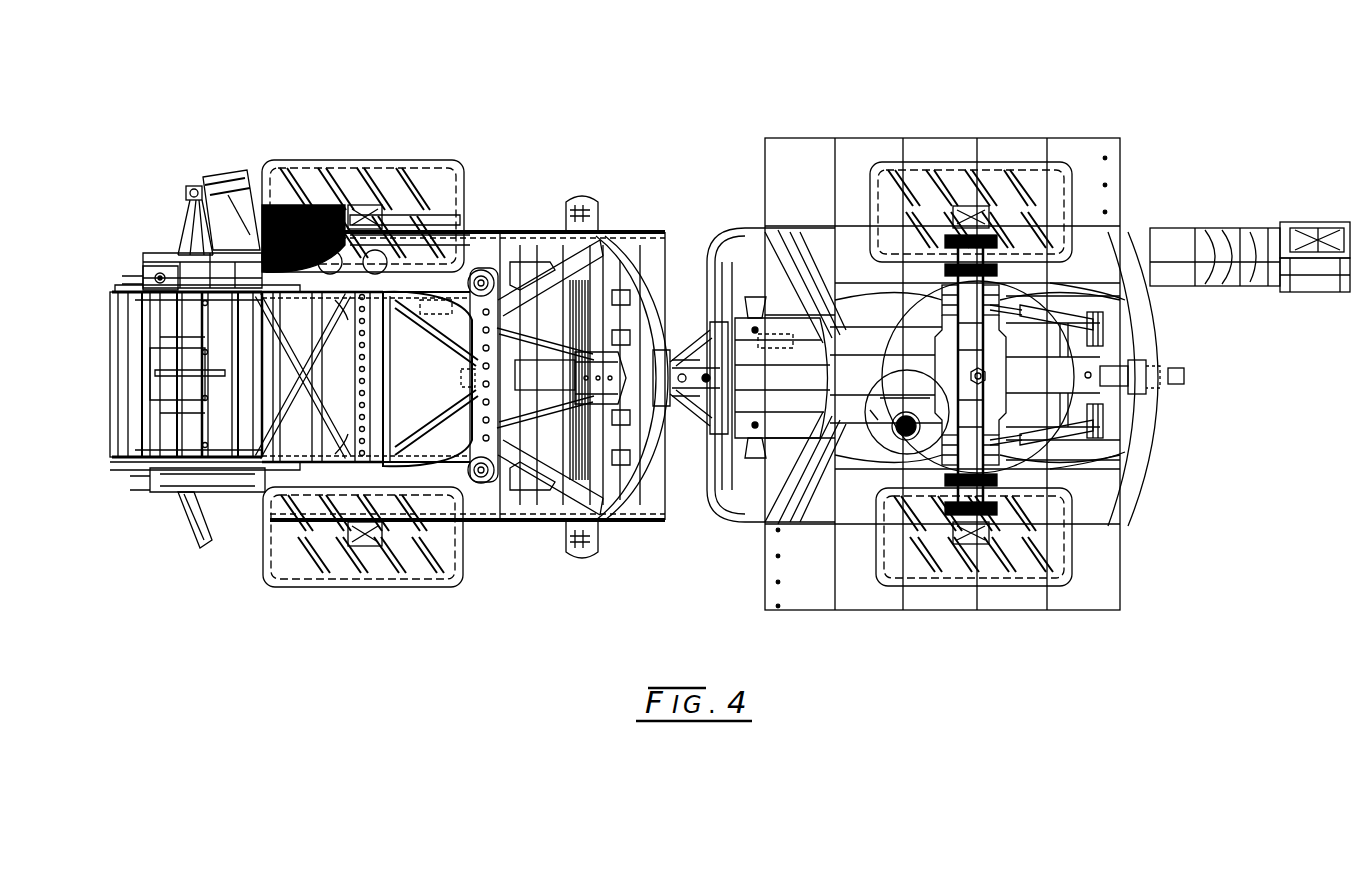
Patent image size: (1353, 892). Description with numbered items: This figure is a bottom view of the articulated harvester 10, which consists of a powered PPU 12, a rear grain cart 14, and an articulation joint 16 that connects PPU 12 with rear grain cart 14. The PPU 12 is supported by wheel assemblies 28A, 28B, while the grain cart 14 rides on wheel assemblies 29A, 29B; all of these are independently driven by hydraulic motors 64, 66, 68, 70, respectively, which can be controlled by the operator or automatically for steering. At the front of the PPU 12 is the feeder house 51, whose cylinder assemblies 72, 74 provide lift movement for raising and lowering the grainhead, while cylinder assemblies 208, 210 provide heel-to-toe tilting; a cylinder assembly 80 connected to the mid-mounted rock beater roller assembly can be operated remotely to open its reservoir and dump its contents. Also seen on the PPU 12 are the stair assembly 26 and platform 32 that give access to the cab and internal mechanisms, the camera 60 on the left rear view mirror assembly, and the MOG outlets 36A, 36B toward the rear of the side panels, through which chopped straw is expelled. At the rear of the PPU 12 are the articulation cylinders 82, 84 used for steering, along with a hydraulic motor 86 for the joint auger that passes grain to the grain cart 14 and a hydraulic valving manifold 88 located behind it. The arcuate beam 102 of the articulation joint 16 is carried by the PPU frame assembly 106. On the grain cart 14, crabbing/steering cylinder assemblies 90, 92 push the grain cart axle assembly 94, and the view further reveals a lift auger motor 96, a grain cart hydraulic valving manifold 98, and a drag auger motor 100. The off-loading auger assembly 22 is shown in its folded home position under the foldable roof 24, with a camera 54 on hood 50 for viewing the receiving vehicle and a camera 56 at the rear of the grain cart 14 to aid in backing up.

The articulated harvester 10 is at (560, 108).
The powered PPU 12 is at (348, 104).
The rear grain cart 14 is at (1116, 100).
The articulation joint 16 is at (675, 300).
The off-loading auger assembly 22 is at (1186, 240).
The foldable roof 24 is at (808, 165).
The stair assembly 26 is at (226, 176).
The wheel assembly 28A is at (427, 162).
The wheel assembly 28B is at (432, 588).
The wheel assembly 29A is at (992, 200).
The wheel assembly 29B is at (996, 590).
The platform 32 is at (300, 206).
The MOG outlet 36A is at (579, 186).
The MOG outlet 36B is at (587, 566).
The hood 50 is at (1318, 282).
The feeder house 51 is at (108, 238).
The camera 54 is at (1346, 218).
The camera 56 is at (1186, 374).
The camera 60 is at (192, 186).
The hydraulic motor 64 is at (374, 205).
The hydraulic motor 66 is at (360, 544).
The hydraulic motor 68 is at (952, 200).
The hydraulic motor 70 is at (968, 566).
The cylinder assembly 72 is at (188, 252).
The cylinder assembly 74 is at (182, 504).
The cylinder assembly 80 is at (185, 386).
The articulation cylinder 82 is at (508, 370).
The articulation cylinder 84 is at (520, 400).
The hydraulic motor 86 is at (460, 376).
The hydraulic valving manifold 88 is at (443, 330).
The crabbing/steering cylinder assembly 90 is at (1052, 330).
The crabbing/steering cylinder assembly 92 is at (1070, 445).
The grain cart axle assembly 94 is at (975, 456).
The lift auger motor 96 is at (900, 432).
The grain cart hydraulic valving manifold 98 is at (780, 335).
The drag auger motor 100 is at (1150, 372).
The arcuate beam 102 is at (640, 470).
The PPU frame assembly 106 is at (548, 268).
The cylinder assembly 208 is at (157, 290).
The cylinder assembly 210 is at (162, 458).